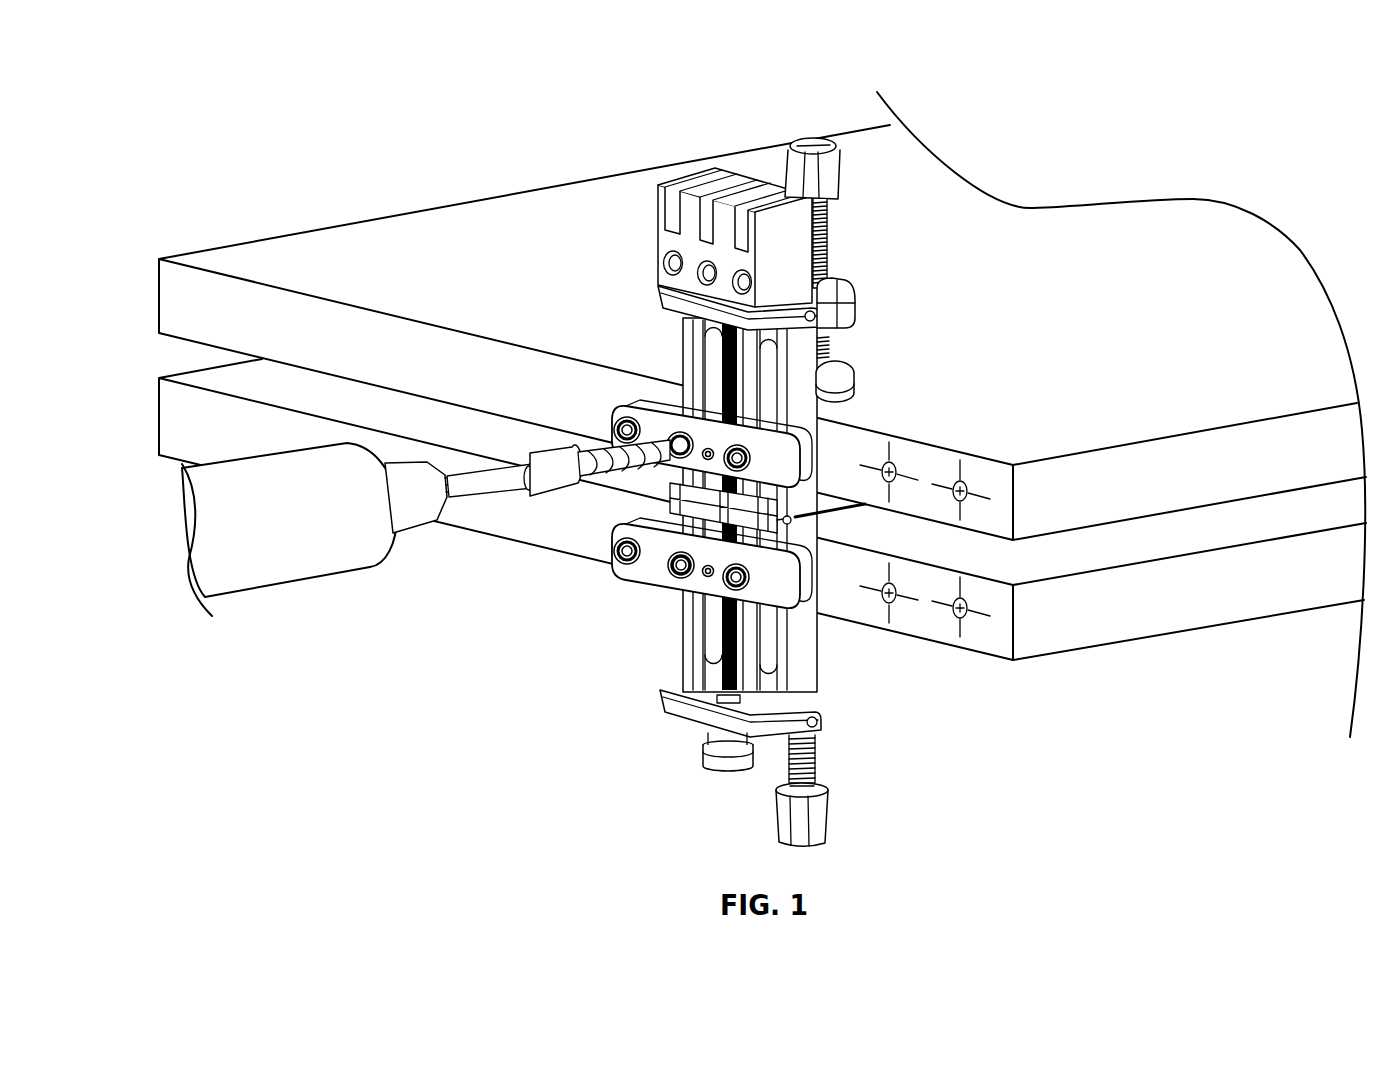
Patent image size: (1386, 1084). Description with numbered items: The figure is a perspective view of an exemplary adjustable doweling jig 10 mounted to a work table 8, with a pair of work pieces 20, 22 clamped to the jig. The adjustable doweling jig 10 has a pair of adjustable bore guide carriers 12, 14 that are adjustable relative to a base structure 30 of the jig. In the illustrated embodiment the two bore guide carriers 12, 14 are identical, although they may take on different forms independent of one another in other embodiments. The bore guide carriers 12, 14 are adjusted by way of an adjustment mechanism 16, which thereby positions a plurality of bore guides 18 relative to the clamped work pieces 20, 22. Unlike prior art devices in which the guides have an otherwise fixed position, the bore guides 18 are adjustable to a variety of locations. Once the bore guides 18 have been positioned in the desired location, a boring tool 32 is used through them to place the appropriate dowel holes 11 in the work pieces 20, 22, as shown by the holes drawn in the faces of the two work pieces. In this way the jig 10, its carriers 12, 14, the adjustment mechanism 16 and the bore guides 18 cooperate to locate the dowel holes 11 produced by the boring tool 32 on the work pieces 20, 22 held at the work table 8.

The work table 8 is at (1098, 630).
The adjustable doweling jig 10 is at (875, 800).
The dowel holes 11 is at (889, 460).
The adjustable bore guide carrier 12 is at (588, 416).
The adjustable bore guide carrier 14 is at (612, 548).
The adjustment mechanism 16 is at (696, 772).
The bore guides 18 is at (613, 414).
The work piece 20 is at (178, 292).
The work piece 22 is at (178, 411).
The base structure 30 is at (802, 367).
The boring tool 32 is at (258, 572).